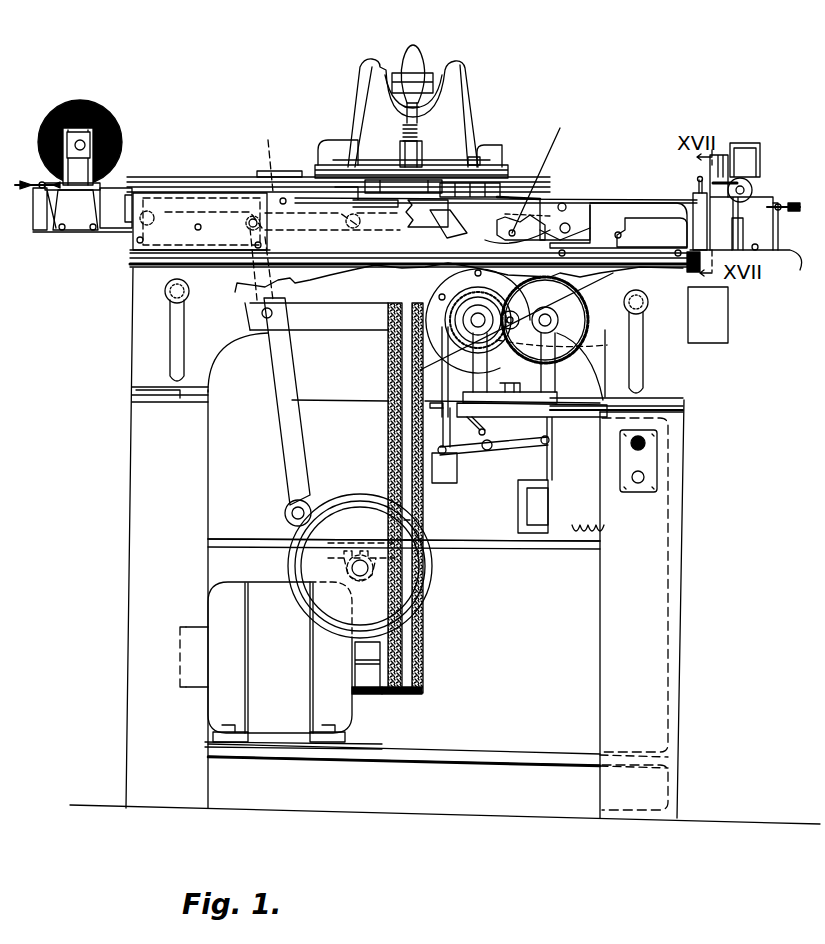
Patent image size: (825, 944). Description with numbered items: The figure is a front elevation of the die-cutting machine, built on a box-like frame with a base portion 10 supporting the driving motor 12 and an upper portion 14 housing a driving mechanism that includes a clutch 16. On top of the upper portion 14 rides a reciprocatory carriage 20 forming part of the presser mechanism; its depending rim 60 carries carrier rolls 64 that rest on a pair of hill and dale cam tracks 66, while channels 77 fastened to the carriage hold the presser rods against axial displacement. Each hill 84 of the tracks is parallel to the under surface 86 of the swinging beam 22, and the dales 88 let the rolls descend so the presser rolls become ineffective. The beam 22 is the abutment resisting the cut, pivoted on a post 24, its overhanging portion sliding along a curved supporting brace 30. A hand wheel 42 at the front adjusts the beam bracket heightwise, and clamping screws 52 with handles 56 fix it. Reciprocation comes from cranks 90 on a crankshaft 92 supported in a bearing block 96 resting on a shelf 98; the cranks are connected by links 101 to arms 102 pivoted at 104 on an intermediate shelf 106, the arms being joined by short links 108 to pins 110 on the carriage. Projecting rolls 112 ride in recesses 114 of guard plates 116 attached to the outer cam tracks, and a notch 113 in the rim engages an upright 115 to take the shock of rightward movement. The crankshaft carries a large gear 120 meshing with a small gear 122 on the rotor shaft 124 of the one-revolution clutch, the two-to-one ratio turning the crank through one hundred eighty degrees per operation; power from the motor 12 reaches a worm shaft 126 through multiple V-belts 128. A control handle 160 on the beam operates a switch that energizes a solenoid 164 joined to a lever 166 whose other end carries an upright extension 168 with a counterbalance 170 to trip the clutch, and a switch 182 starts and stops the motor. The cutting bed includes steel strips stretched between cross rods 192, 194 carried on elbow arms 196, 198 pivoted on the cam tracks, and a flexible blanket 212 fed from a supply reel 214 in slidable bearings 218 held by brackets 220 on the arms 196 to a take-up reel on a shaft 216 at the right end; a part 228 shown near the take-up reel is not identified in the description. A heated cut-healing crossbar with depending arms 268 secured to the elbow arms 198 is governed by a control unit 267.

The base portion 10 is at (682, 626).
The driving motor 12 is at (340, 712).
The upper portion 14 is at (672, 386).
The clutch 16 is at (462, 283).
The reciprocatory carriage 20 is at (578, 208).
The swinging beam 22 is at (468, 100).
The post 24 is at (448, 223).
The curved supporting brace 30 is at (262, 178).
The hand wheel 42 is at (430, 590).
The screws 52 is at (190, 290).
The handles 56 is at (170, 335).
The depending rim 60 is at (352, 275).
The carrier rolls 64 is at (567, 222).
The hill and dale cam tracks 66 is at (643, 237).
The channels 77 is at (352, 200).
The hill 84 is at (612, 232).
The under surface 86 is at (302, 193).
The dales 88 is at (500, 147).
The cranks 90 is at (560, 376).
The crankshaft 92 is at (523, 320).
The bearing block 96 is at (590, 362).
The shelf 98 is at (567, 418).
The links 101 is at (303, 275).
The arms 102 is at (280, 378).
The pivot 104 is at (285, 510).
The intermediate shelf 106 is at (470, 542).
The short links 108 is at (268, 140).
The pins 110 is at (400, 236).
The projecting rolls 112 is at (200, 221).
The notch 113 is at (556, 171).
The recesses 114 is at (168, 170).
The upright 115 is at (620, 210).
The guard plates 116 is at (190, 250).
The large gear 120 is at (645, 312).
The small gear 122 is at (500, 302).
The rotor shaft 124 is at (484, 330).
The worm shaft 126 is at (385, 367).
The multiple V-belts 128 is at (388, 455).
The control handle 160 is at (412, 55).
The solenoid 164 is at (527, 512).
The lever 166 is at (515, 450).
The upright extension 168 is at (445, 360).
The counterbalance 170 is at (448, 478).
The switch 182 is at (648, 458).
The cross rod 192 is at (38, 183).
The cross rod 194 is at (787, 194).
The elbow arms 196 is at (40, 232).
The elbow arms 198 is at (800, 257).
The flexible blanket 212 is at (115, 183).
The supply reel 214 is at (62, 104).
The shaft 216 is at (752, 162).
The slidable bearings 218 is at (120, 113).
The brackets 220 is at (80, 215).
The wheel 228 is at (750, 183).
The control unit 267 is at (715, 315).
The depending arms 268 is at (693, 200).